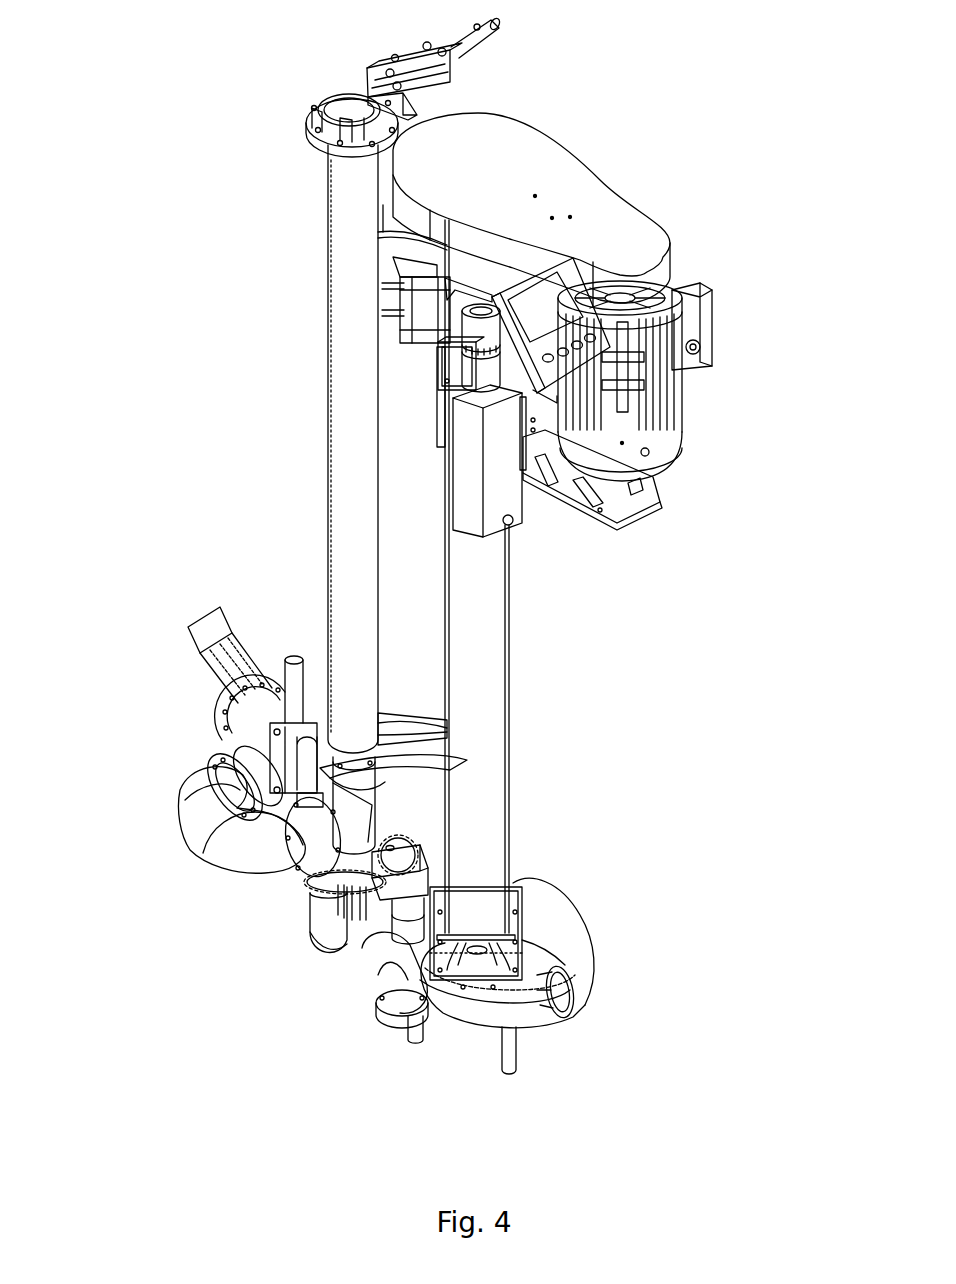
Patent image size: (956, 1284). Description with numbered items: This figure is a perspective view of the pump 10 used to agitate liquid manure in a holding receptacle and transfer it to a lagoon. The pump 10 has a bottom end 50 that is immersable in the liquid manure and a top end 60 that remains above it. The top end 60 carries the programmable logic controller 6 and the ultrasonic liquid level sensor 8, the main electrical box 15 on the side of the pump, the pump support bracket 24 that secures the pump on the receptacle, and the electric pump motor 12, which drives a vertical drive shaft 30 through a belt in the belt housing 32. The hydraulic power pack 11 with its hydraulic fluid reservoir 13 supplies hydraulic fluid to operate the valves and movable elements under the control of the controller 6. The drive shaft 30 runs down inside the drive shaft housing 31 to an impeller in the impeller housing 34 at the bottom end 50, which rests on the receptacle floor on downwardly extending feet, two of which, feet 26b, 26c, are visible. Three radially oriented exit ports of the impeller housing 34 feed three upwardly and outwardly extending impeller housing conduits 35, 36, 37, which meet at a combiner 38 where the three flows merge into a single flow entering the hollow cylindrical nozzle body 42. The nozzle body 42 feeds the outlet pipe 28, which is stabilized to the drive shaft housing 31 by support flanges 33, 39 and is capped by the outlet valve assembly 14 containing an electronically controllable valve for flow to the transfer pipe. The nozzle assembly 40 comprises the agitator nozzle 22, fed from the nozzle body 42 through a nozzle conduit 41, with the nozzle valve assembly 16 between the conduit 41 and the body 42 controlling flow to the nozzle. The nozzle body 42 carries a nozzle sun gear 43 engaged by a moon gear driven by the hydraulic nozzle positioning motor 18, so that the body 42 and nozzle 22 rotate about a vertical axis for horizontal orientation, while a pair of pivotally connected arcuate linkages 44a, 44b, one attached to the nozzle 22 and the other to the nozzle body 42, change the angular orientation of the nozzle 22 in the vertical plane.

The programmable logic controller 6 is at (600, 325).
The ultrasonic liquid level sensor 8 is at (447, 382).
The pump 10 is at (678, 118).
The hydraulic power pack 11 is at (470, 318).
The electric pump motor 12 is at (666, 386).
The hydraulic fluid reservoir 13 is at (517, 505).
The outlet valve assembly 14 is at (373, 93).
The main electrical box 15 is at (700, 300).
The nozzle valve assembly 16 is at (277, 766).
The hydraulic nozzle positioning motor 18 is at (408, 870).
The agitator nozzle 22 is at (205, 620).
The pump support bracket 24 is at (633, 493).
The foot 26b is at (416, 1040).
The foot 26c is at (512, 1060).
The outlet pipe 28 is at (332, 192).
The vertical drive shaft 30 is at (485, 950).
The drive shaft housing 31 is at (492, 662).
The belt housing 32 is at (503, 130).
The support flange 33 is at (396, 737).
The impeller housing 34 is at (470, 1018).
The impeller housing conduit 35 is at (570, 925).
The impeller housing conduit 36 is at (390, 975).
The impeller housing conduit 37 is at (330, 938).
The combiner 38 is at (330, 888).
The support flange 39 is at (383, 215).
The nozzle assembly 40 is at (128, 742).
The nozzle conduit 41 is at (195, 815).
The nozzle body 42 is at (368, 795).
The nozzle sun gear 43 is at (398, 840).
The arcuate linkage 44a is at (220, 712).
The arcuate linkage 44b is at (278, 680).
The bottom end 50 is at (632, 1067).
The top end 60 is at (735, 428).